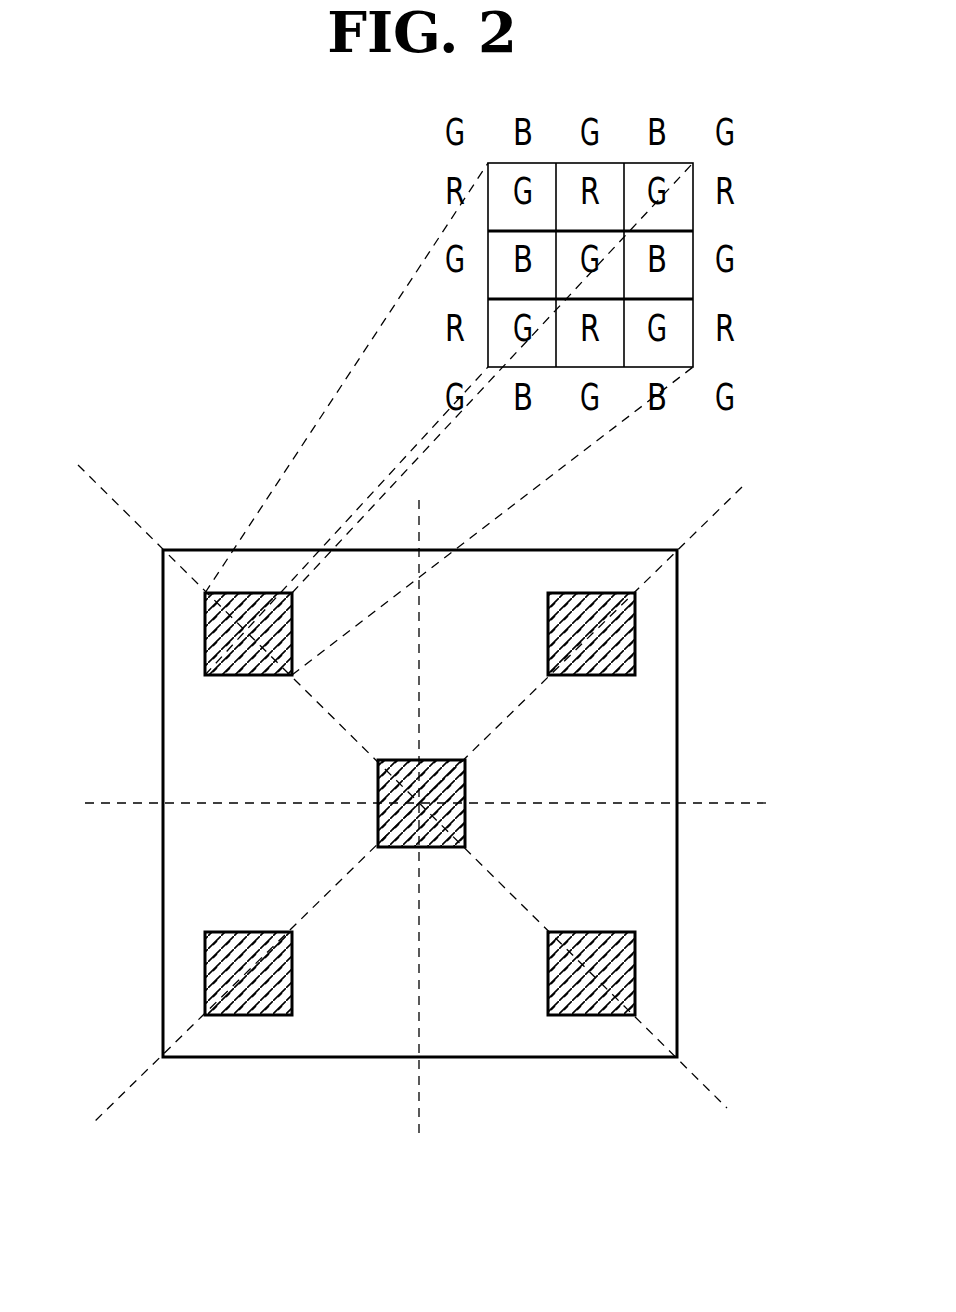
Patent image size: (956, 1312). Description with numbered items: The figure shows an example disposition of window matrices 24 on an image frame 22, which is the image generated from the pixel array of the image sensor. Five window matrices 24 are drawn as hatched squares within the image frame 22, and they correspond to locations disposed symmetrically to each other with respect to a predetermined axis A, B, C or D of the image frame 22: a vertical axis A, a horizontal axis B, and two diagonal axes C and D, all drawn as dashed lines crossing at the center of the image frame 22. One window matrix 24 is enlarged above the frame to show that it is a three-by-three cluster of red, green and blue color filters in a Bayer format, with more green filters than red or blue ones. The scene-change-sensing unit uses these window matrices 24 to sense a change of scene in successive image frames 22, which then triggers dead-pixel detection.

The image frame 22 is at (677, 805).
The window matrix 24 is at (635, 638).
The axis A is at (419, 846).
The axis B is at (402, 803).
The axis C is at (440, 783).
The axis D is at (424, 810).